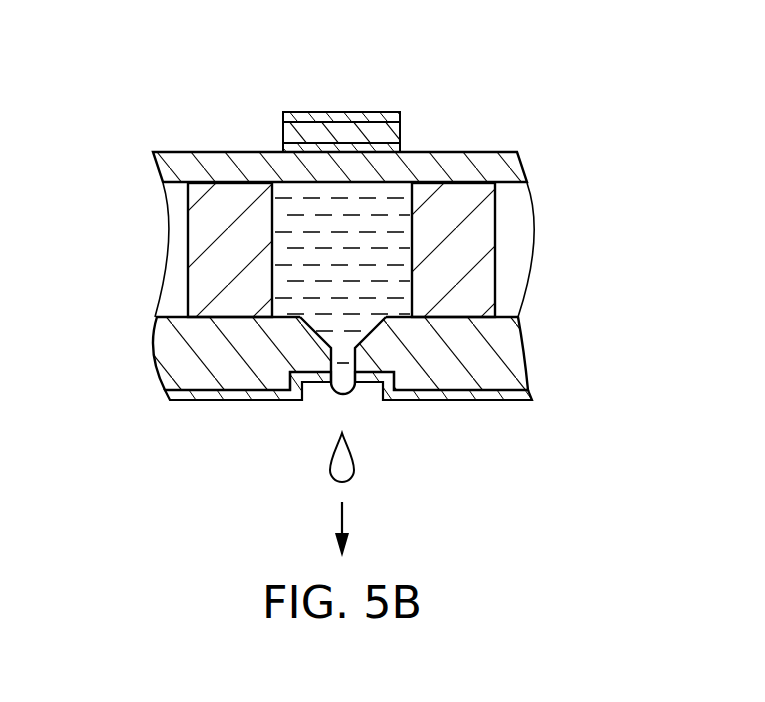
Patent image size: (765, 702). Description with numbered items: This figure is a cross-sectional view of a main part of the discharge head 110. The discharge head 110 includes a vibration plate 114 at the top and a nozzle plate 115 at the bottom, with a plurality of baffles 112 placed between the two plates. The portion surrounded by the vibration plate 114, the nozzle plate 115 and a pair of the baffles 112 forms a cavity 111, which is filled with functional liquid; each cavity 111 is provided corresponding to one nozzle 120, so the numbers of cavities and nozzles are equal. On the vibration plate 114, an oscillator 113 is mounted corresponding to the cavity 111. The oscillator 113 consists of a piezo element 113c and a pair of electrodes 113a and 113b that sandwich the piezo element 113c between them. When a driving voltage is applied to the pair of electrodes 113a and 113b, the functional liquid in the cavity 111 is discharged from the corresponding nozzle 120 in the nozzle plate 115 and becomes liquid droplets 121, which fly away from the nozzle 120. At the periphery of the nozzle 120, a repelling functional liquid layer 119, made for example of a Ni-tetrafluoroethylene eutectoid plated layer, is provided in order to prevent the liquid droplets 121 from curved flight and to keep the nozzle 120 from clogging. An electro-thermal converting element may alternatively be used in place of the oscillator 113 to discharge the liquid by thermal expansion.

The discharge head 110 is at (636, 41).
The cavity 111 is at (395, 220).
The baffle 112 is at (208, 278).
The oscillator 113 is at (337, 96).
The electrode 113a is at (350, 112).
The electrode 113b is at (283, 147).
The piezo element 113c is at (383, 135).
The vibration plate 114 is at (495, 167).
The nozzle plate 115 is at (490, 360).
The repelling functional liquid layer 119 is at (513, 395).
The nozzle 120 is at (330, 361).
The liquid droplets 121 is at (355, 462).